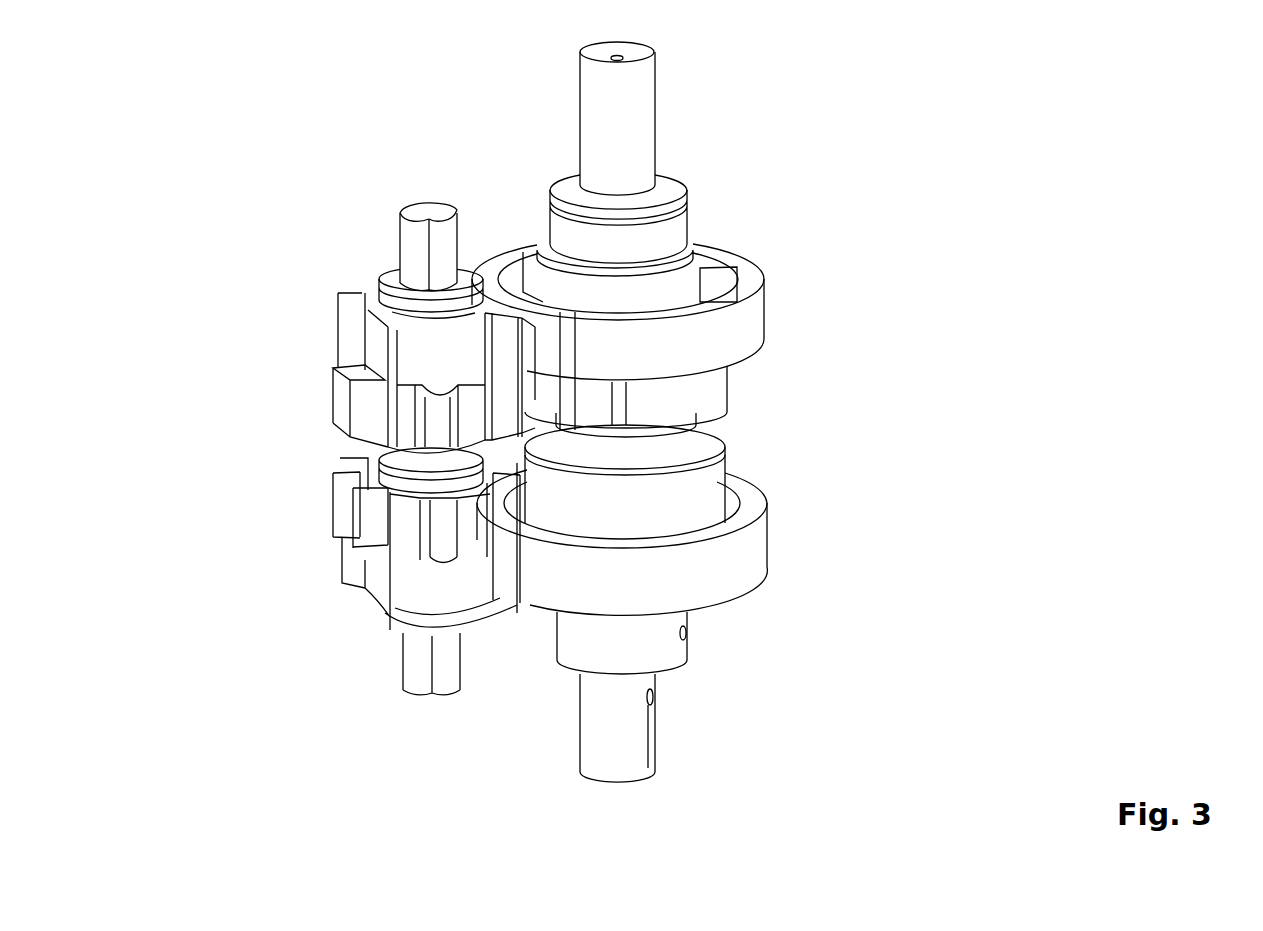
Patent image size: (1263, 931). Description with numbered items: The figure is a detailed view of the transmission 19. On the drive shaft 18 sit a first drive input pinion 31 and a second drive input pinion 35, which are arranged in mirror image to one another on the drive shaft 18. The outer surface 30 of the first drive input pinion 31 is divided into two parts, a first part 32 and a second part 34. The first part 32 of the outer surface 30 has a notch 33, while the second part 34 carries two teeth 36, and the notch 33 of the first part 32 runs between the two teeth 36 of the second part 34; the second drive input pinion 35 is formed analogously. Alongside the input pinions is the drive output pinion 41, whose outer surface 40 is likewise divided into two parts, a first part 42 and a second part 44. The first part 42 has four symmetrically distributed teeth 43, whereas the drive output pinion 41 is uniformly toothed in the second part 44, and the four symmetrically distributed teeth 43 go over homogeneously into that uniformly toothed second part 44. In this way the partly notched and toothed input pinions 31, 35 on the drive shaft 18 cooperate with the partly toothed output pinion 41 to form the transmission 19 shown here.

The drive shaft 18 is at (640, 140).
The transmission 19 is at (916, 272).
The outer surface 30 is at (780, 258).
The first drive input pinion 31 is at (592, 428).
The first part 32 is at (718, 333).
The notch 33 is at (578, 418).
The second part 34 is at (717, 385).
The second drive input pinion 35 is at (584, 548).
The teeth 36 is at (605, 441).
The outer surface 40 is at (316, 415).
The drive output pinion 41 is at (397, 283).
The first part 42 is at (353, 337).
The teeth 43 is at (356, 305).
The second part 44 is at (372, 447).